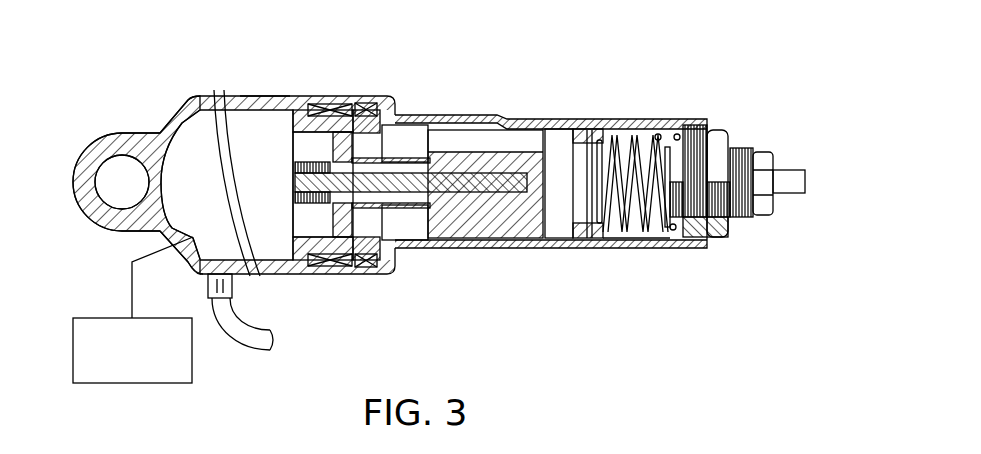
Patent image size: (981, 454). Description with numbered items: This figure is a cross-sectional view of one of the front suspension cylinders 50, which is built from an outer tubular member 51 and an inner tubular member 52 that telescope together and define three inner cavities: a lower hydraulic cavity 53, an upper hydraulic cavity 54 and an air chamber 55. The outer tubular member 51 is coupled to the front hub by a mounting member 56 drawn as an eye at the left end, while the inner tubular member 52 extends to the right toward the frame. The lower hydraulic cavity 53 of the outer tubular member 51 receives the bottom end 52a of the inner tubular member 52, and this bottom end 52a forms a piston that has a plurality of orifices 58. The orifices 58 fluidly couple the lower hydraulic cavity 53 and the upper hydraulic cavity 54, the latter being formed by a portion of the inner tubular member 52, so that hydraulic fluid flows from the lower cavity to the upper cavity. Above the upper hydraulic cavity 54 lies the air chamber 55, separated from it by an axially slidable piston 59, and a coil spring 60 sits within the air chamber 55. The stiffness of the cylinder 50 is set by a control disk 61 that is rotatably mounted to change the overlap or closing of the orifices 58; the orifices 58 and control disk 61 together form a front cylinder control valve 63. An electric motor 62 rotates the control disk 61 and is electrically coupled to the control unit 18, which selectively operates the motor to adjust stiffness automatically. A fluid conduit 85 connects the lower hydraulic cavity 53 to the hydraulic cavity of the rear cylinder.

The control unit 18 is at (122, 383).
The cylinder 50 is at (592, 73).
The outer tubular member 51 is at (300, 94).
The inner tubular member 52 is at (517, 116).
The bottom end 52a is at (266, 97).
The lower hydraulic cavity 53 is at (203, 140).
The upper hydraulic cavity 54 is at (410, 140).
The air chamber 55 is at (644, 140).
The mounting member 56 is at (101, 138).
The orifices 58 is at (370, 140).
The axially slidable piston 59 is at (582, 203).
The coil spring 60 is at (642, 224).
The control disk 61 is at (352, 148).
The electric motor 62 is at (263, 276).
The front cylinder control valve 63 is at (322, 215).
The fluid conduit 85 is at (235, 341).